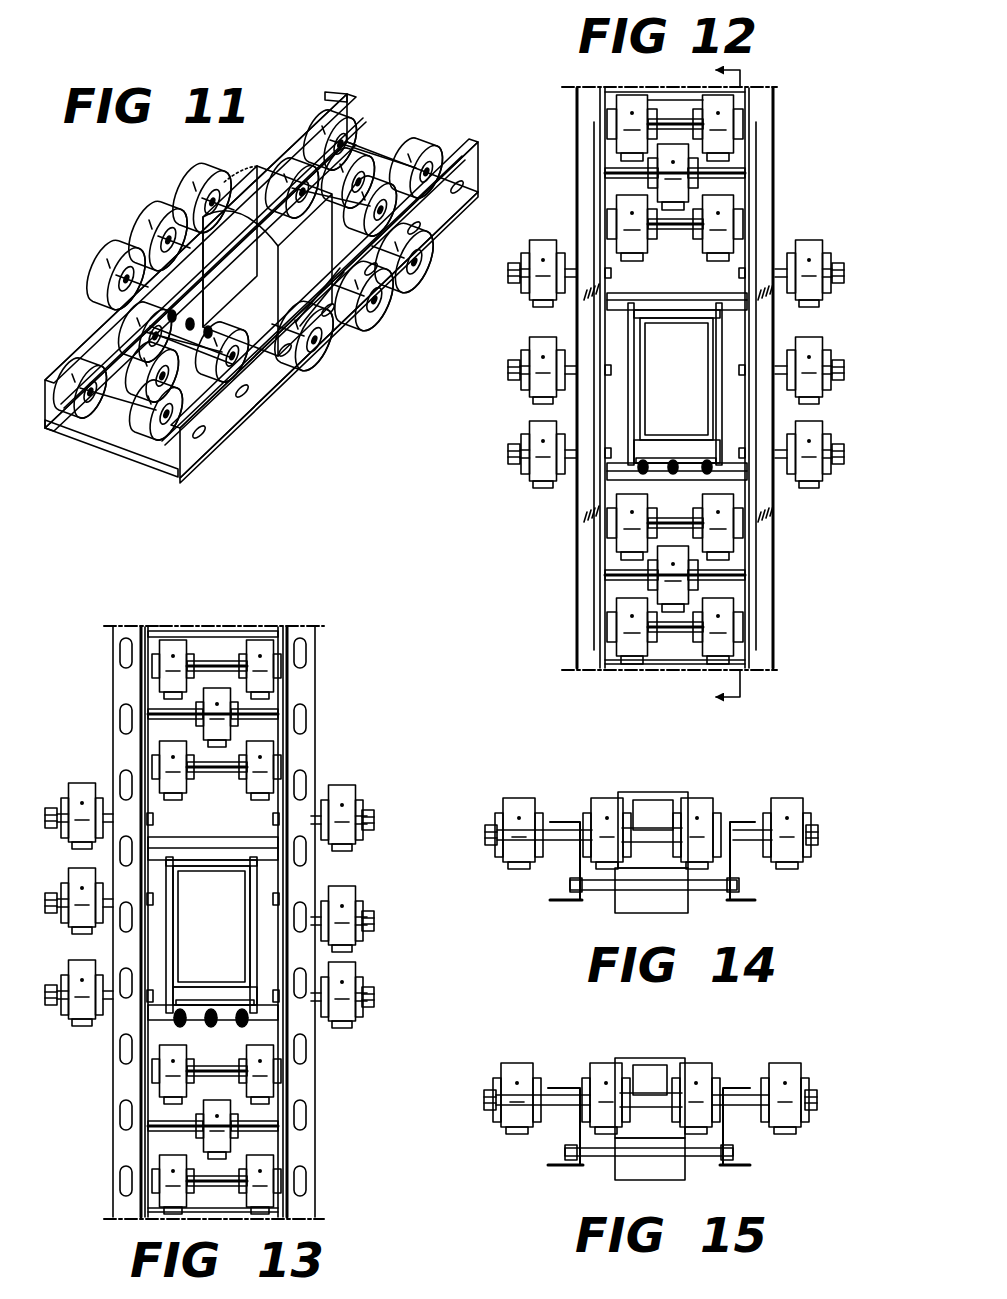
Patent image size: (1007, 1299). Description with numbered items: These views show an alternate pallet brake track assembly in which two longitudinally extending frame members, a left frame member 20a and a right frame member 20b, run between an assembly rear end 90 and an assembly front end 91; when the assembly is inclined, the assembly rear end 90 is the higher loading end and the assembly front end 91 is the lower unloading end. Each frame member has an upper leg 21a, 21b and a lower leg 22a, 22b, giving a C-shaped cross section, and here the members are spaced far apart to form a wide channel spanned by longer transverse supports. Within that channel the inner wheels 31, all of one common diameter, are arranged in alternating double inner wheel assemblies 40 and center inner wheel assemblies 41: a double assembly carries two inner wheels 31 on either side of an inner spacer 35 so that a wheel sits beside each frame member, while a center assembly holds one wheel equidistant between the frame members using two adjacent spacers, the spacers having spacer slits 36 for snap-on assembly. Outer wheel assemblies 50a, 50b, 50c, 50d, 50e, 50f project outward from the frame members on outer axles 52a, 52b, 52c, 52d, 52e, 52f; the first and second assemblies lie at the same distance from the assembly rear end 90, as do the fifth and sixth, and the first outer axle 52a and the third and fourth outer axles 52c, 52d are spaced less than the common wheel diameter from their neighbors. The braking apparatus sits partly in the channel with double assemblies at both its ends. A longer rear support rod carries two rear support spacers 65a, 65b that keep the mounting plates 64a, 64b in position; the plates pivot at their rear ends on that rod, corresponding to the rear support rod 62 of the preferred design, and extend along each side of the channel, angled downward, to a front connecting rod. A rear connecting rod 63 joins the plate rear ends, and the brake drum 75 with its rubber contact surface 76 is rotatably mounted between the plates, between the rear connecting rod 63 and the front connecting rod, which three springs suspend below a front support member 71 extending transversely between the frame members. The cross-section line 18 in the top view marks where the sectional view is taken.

In FIG. 12, the section line 18 is at (718, 383).
In FIG. 11, the left frame member 20a is at (47, 432).
In FIG. 12, the left frame member 20a is at (584, 121).
In FIG. 13, the left frame member 20a is at (318, 632).
In FIG. 11, the right frame member 20b is at (179, 482).
In FIG. 12, the right frame member 20b is at (762, 112).
In FIG. 13, the right frame member 20b is at (112, 631).
In FIG. 11, the upper leg 21a is at (46, 378).
In FIG. 12, the upper leg 21a is at (592, 162).
In FIG. 14, the upper leg 21a is at (556, 821).
In FIG. 15, the upper leg 21a is at (736, 1087).
In FIG. 11, the upper leg 21b is at (205, 443).
In FIG. 12, the upper leg 21b is at (760, 144).
In FIG. 14, the upper leg 21b is at (735, 821).
In FIG. 15, the upper leg 21b is at (553, 1087).
In FIG. 11, the lower leg 22a is at (66, 440).
In FIG. 13, the lower leg 22a is at (303, 682).
In FIG. 14, the lower leg 22a is at (553, 902).
In FIG. 15, the lower leg 22a is at (745, 1166).
In FIG. 11, the lower leg 22b is at (184, 480).
In FIG. 13, the lower leg 22b is at (126, 690).
In FIG. 14, the lower leg 22b is at (756, 901).
In FIG. 15, the lower leg 22b is at (553, 1166).
In FIG. 11, the inner wheels 31 is at (332, 122).
In FIG. 12, the inner wheels 31 is at (772, 92).
In FIG. 13, the inner wheels 31 is at (214, 922).
In FIG. 13, the inner spacer 35 is at (262, 712).
In FIG. 13, the spacer slits 36 is at (264, 720).
In FIG. 11, the double inner wheel assembly 40 is at (438, 140).
In FIG. 12, the double inner wheel assembly 40 is at (675, 110).
In FIG. 13, the double inner wheel assembly 40 is at (216, 927).
In FIG. 14, the double inner wheel assembly 40 is at (603, 796).
In FIG. 15, the double inner wheel assembly 40 is at (632, 1098).
In FIG. 11, the center inner wheel assembly 41 is at (382, 132).
In FIG. 12, the center inner wheel assembly 41 is at (754, 170).
In FIG. 14, the center inner wheel assembly 41 is at (652, 810).
In FIG. 11, the first outer wheel assembly 50a is at (424, 276).
In FIG. 12, the first outer wheel assembly 50a is at (829, 262).
In FIG. 13, the first outer wheel assembly 50a is at (68, 798).
In FIG. 15, the first outer wheel assembly 50a is at (516, 1062).
In FIG. 11, the second outer wheel assembly 50b is at (178, 170).
In FIG. 12, the second outer wheel assembly 50b is at (529, 248).
In FIG. 13, the second outer wheel assembly 50b is at (366, 800).
In FIG. 15, the second outer wheel assembly 50b is at (783, 1062).
In FIG. 11, the third outer wheel assembly 50c is at (386, 322).
In FIG. 12, the third outer wheel assembly 50c is at (832, 390).
In FIG. 13, the third outer wheel assembly 50c is at (64, 930).
In FIG. 11, the fourth outer wheel assembly 50d is at (133, 208).
In FIG. 12, the fourth outer wheel assembly 50d is at (530, 345).
In FIG. 13, the fourth outer wheel assembly 50d is at (370, 935).
In FIG. 11, the fifth outer wheel assembly 50e is at (322, 375).
In FIG. 12, the fifth outer wheel assembly 50e is at (833, 490).
In FIG. 13, the fifth outer wheel assembly 50e is at (60, 1025).
In FIG. 14, the fifth outer wheel assembly 50e is at (787, 797).
In FIG. 11, the sixth outer wheel assembly 50f is at (90, 250).
In FIG. 12, the sixth outer wheel assembly 50f is at (530, 428).
In FIG. 13, the sixth outer wheel assembly 50f is at (364, 1012).
In FIG. 14, the sixth outer wheel assembly 50f is at (520, 797).
In FIG. 12, the first outer axle 52a is at (844, 284).
In FIG. 12, the second outer axle 52b is at (514, 285).
In FIG. 12, the third outer axle 52c is at (845, 360).
In FIG. 12, the fourth outer axle 52d is at (514, 381).
In FIG. 12, the fifth outer axle 52e is at (845, 452).
In FIG. 12, the sixth outer axle 52f is at (514, 465).
In FIG. 12, the rear support rod 62 is at (736, 294).
In FIG. 13, the rear support rod 62 is at (279, 838).
In FIG. 12, the rear connecting rod 63 is at (702, 300).
In FIG. 13, the rear connecting rod 63 is at (279, 850).
In FIG. 12, the mounting plate 64a is at (628, 440).
In FIG. 13, the mounting plate 64a is at (258, 922).
In FIG. 11, the mounting plate 64b is at (330, 322).
In FIG. 12, the mounting plate 64b is at (723, 400).
In FIG. 12, the rear support spacer 65a is at (604, 286).
In FIG. 12, the rear support spacer 65b is at (743, 330).
In FIG. 11, the front support member 71 is at (234, 364).
In FIG. 12, the front support member 71 is at (722, 484).
In FIG. 13, the front support member 71 is at (252, 1022).
In FIG. 11, the brake drum 75 is at (256, 195).
In FIG. 12, the brake drum 75 is at (660, 348).
In FIG. 13, the brake drum 75 is at (234, 942).
In FIG. 14, the brake drum 75 is at (673, 800).
In FIG. 15, the brake drum 75 is at (673, 1068).
In FIG. 11, the rubber contact surface 76 is at (236, 206).
In FIG. 11, the assembly rear end 90 is at (346, 90).
In FIG. 12, the assembly rear end 90 is at (577, 82).
In FIG. 13, the assembly rear end 90 is at (140, 621).
In FIG. 13, the assembly front end 91 is at (128, 1223).